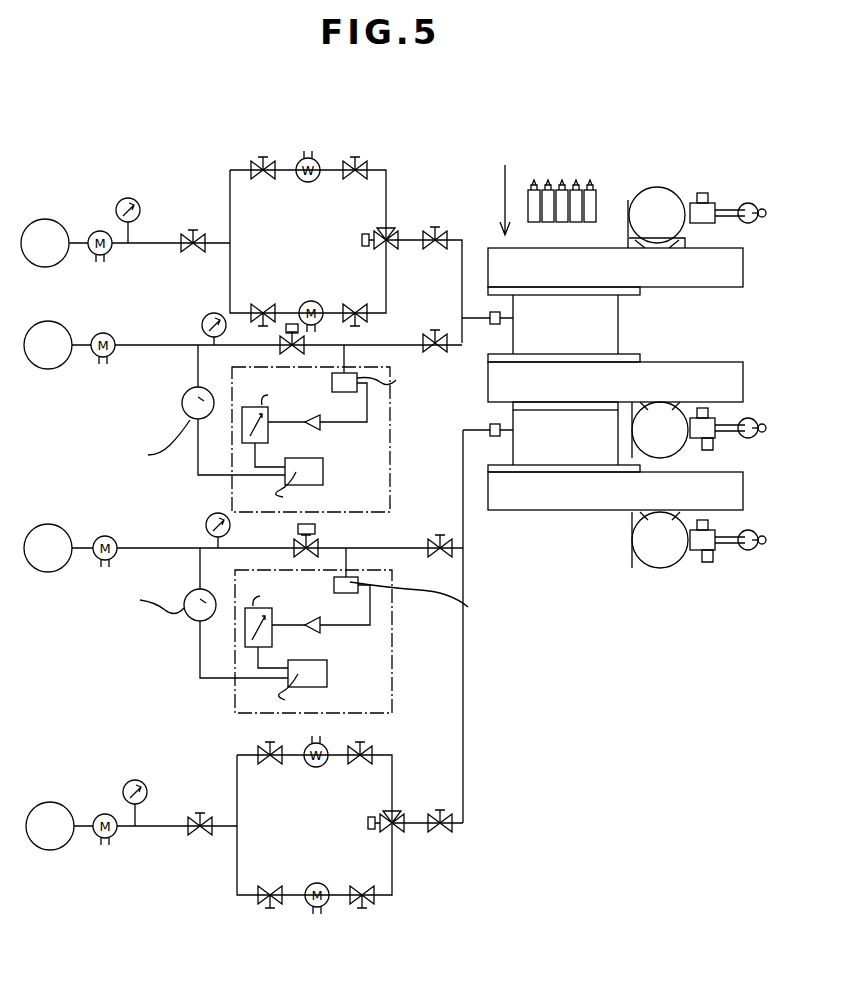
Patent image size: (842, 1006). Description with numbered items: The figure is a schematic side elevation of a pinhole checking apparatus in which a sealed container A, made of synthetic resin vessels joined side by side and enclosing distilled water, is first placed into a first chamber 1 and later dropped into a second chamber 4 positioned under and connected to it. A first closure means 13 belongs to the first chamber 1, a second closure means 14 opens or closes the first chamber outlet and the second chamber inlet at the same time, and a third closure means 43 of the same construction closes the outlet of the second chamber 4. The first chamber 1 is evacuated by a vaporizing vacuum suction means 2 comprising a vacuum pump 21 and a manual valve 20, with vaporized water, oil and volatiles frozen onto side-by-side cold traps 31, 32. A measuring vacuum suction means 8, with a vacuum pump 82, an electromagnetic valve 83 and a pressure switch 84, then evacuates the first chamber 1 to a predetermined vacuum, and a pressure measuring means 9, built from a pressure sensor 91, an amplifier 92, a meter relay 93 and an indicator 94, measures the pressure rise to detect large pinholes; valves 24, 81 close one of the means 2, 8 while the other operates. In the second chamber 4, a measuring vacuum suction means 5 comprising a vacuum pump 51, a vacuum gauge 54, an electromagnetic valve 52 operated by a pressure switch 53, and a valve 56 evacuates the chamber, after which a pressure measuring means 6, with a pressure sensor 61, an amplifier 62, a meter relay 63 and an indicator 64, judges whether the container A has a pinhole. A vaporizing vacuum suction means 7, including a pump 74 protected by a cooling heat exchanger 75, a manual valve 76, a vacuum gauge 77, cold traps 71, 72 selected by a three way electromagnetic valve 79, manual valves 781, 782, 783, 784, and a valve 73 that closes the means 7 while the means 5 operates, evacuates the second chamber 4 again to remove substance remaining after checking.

The first chamber 1 is at (618, 337).
The second chamber 4 is at (568, 452).
The first closure means 13 is at (665, 200).
The second closure means 14 is at (668, 448).
The third closure means 43 is at (660, 565).
The sealed container A is at (598, 200).
The vaporizing vacuum suction means 2 is at (171, 187).
The vacuum pump 21 is at (47, 222).
The manual valve 20 is at (193, 228).
The cold trap 31 is at (310, 182).
The cold trap 32 is at (300, 303).
The valve 24 is at (435, 226).
The valve 81 is at (435, 329).
The vacuum pump 82 is at (57, 353).
The electromagnetic valve 83 is at (283, 352).
The measuring vacuum suction means 8 is at (168, 370).
The pressure switch 84 is at (192, 410).
The measuring vacuum suction means 5 is at (290, 498).
The pressure measuring means 9 is at (392, 495).
The pressure sensor 91 is at (350, 373).
The amplifier 92 is at (318, 415).
The meter relay 93 is at (262, 440).
The indicator 94 is at (323, 470).
The vacuum pump 51 is at (50, 525).
The vacuum gauge 54 is at (208, 520).
The electromagnetic valve 52 is at (315, 528).
The valve 56 is at (440, 535).
The pressure switch 53 is at (190, 618).
The pressure measuring means 6 is at (394, 690).
The pressure sensor 61 is at (352, 582).
The amplifier 62 is at (318, 630).
The meter relay 63 is at (266, 645).
The indicator 64 is at (327, 672).
The vaporizing vacuum suction means 7 is at (177, 775).
The pump 74 is at (52, 808).
The cooling heat exchanger 75 is at (100, 838).
The vacuum gauge 77 is at (130, 782).
The manual valve 76 is at (205, 836).
The manual valve 782 is at (270, 765).
The cold trap 71 is at (318, 767).
The manual valve 781 is at (366, 763).
The manual valve 784 is at (278, 905).
The cold trap 72 is at (305, 887).
The manual valve 783 is at (356, 910).
The three way electromagnetic valve 79 is at (400, 832).
The valve 73 is at (440, 808).